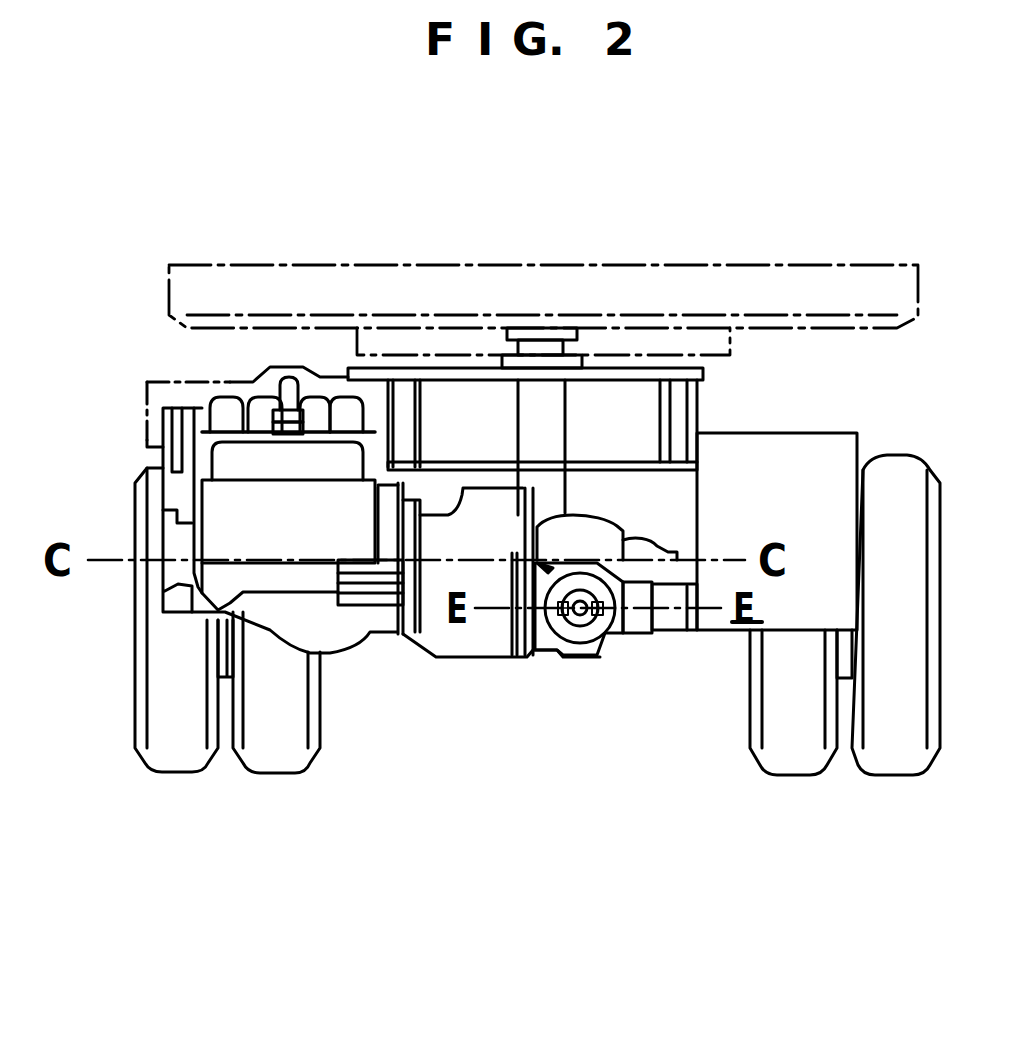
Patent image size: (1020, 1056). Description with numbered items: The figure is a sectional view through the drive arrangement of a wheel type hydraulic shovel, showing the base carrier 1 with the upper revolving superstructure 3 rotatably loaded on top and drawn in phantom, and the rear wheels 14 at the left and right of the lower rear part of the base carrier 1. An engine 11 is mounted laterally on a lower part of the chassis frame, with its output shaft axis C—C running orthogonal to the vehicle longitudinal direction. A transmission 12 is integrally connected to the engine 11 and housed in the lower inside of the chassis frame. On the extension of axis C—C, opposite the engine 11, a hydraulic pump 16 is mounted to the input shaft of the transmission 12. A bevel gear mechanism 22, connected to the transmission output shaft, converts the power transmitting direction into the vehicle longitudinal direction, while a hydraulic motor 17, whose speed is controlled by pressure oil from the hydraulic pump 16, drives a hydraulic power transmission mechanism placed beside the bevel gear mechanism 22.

The base carrier 1 is at (715, 767).
The upper revolving superstructure 3 is at (727, 263).
The engine 11 is at (237, 455).
The transmission 12 is at (457, 647).
The rear wheels 14 is at (173, 748).
The hydraulic pump 16 is at (595, 527).
The hydraulic motor 17 is at (675, 633).
The bevel gear transmission mechanism 22 is at (558, 643).